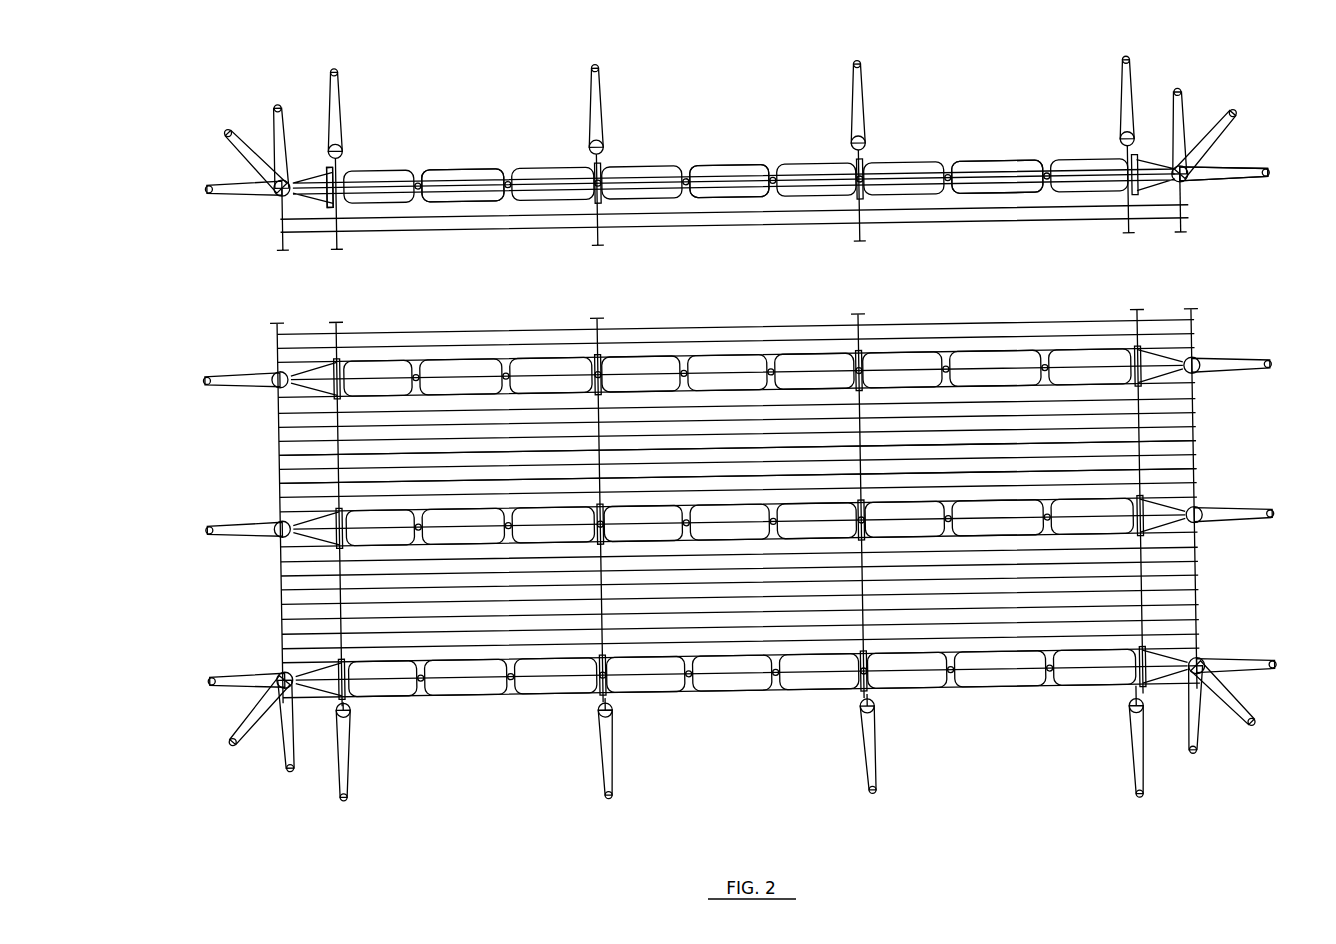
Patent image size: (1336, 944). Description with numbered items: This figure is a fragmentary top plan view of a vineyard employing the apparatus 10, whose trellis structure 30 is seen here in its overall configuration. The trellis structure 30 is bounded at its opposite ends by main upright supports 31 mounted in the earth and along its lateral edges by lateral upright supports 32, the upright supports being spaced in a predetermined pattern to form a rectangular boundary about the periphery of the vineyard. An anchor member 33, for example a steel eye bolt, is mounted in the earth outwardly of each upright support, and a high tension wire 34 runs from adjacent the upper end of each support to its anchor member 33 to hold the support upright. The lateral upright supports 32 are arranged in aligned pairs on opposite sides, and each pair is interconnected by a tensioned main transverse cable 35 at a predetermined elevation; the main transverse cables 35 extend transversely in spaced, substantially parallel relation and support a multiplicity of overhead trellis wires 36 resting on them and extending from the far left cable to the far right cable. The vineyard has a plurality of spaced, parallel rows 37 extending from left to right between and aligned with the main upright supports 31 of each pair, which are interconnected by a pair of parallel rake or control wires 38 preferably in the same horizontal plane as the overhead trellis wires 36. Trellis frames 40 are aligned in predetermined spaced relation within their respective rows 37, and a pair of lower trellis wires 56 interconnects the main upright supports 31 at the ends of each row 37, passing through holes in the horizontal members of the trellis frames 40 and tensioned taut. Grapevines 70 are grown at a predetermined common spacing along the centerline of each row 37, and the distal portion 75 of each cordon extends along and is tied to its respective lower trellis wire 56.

The apparatus 10 is at (1255, 115).
The trellis structure 30 is at (680, 158).
The main upright support 31 is at (1190, 190).
The lateral upright support 32 is at (1125, 143).
The anchor member 33 is at (1268, 170).
The high tension wire 34 is at (1224, 185).
The main transverse cable 35 is at (280, 450).
The overhead trellis wire 36 is at (280, 478).
The row 37 is at (737, 165).
The rake or control wire 38 is at (372, 185).
The trellis frame 40 is at (333, 200).
The lower trellis wire 56 is at (437, 178).
The grapevine 70 is at (418, 170).
The distal portion 75 is at (1030, 160).